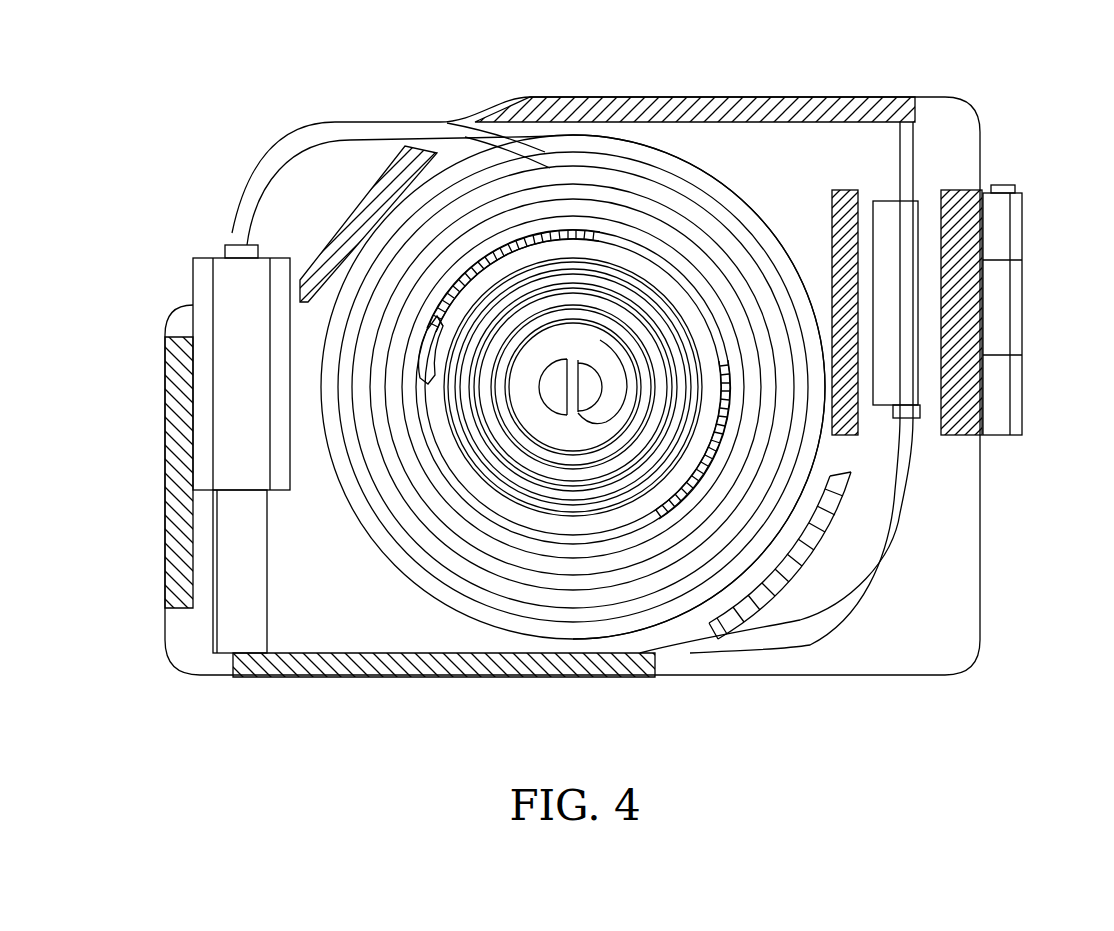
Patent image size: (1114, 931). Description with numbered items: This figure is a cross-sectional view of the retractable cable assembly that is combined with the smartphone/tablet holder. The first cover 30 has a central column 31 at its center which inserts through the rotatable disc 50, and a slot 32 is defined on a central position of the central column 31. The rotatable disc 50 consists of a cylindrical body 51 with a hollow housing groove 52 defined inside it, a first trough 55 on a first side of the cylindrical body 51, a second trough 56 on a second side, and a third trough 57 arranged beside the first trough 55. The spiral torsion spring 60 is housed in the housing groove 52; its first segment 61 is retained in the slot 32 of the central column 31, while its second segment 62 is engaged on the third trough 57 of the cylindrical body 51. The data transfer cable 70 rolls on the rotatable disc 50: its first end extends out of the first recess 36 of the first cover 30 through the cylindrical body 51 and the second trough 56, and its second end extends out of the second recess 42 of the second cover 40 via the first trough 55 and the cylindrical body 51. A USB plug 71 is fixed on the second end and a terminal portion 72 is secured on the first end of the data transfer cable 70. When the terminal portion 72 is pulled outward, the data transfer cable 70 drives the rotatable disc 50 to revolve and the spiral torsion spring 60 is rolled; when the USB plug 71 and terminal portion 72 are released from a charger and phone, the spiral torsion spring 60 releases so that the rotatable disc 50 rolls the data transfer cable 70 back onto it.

The first cover 30 is at (905, 95).
The central column 31 is at (580, 360).
The slot 32 is at (443, 293).
The first recess 36 is at (757, 633).
The second cover 40 is at (262, 665).
The second recess 42 is at (453, 122).
The rotatable disc 50 is at (650, 225).
The cylindrical body 51 is at (690, 258).
The housing groove 52 is at (793, 180).
The first trough 55 is at (417, 378).
The second trough 56 is at (593, 240).
The third trough 57 is at (650, 490).
The spiral torsion spring 60 is at (865, 478).
The first segment 61 is at (550, 357).
The second segment 62 is at (425, 398).
The data transfer cable 70 is at (452, 577).
The USB plug 71 is at (215, 380).
The terminal portion 72 is at (927, 303).